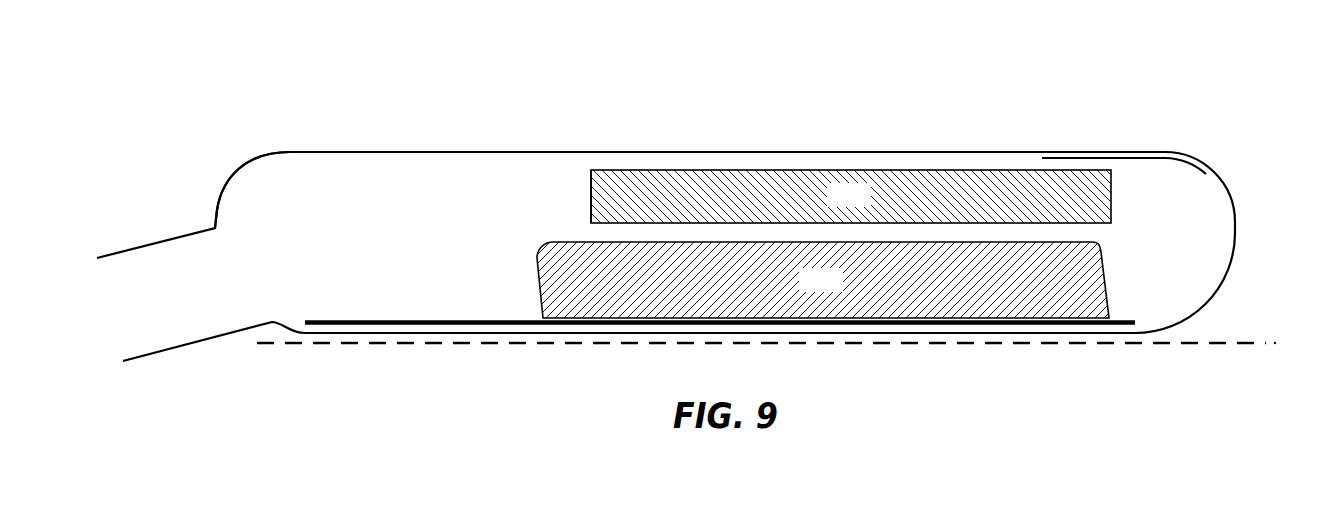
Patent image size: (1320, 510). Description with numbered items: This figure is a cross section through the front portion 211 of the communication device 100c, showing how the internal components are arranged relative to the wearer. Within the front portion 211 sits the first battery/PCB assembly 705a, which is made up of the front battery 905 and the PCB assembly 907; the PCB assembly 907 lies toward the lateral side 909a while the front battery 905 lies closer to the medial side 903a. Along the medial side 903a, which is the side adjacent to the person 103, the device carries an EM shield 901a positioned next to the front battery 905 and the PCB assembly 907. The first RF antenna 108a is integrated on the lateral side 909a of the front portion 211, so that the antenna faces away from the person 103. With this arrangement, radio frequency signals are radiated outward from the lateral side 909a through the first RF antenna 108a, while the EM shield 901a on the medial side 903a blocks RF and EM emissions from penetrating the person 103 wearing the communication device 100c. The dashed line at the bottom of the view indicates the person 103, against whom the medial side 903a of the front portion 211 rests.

The communication device 100c is at (276, 150).
The front portion 211 is at (367, 151).
The first battery/PCB assembly 705a is at (572, 188).
The lateral side 909a is at (668, 151).
The first RF antenna 108a is at (1173, 152).
The PCB assembly 907 is at (851, 196).
The front battery 905 is at (823, 280).
The medial side 903a is at (402, 334).
The EM shield 901a is at (1097, 323).
The person 103 is at (1218, 343).